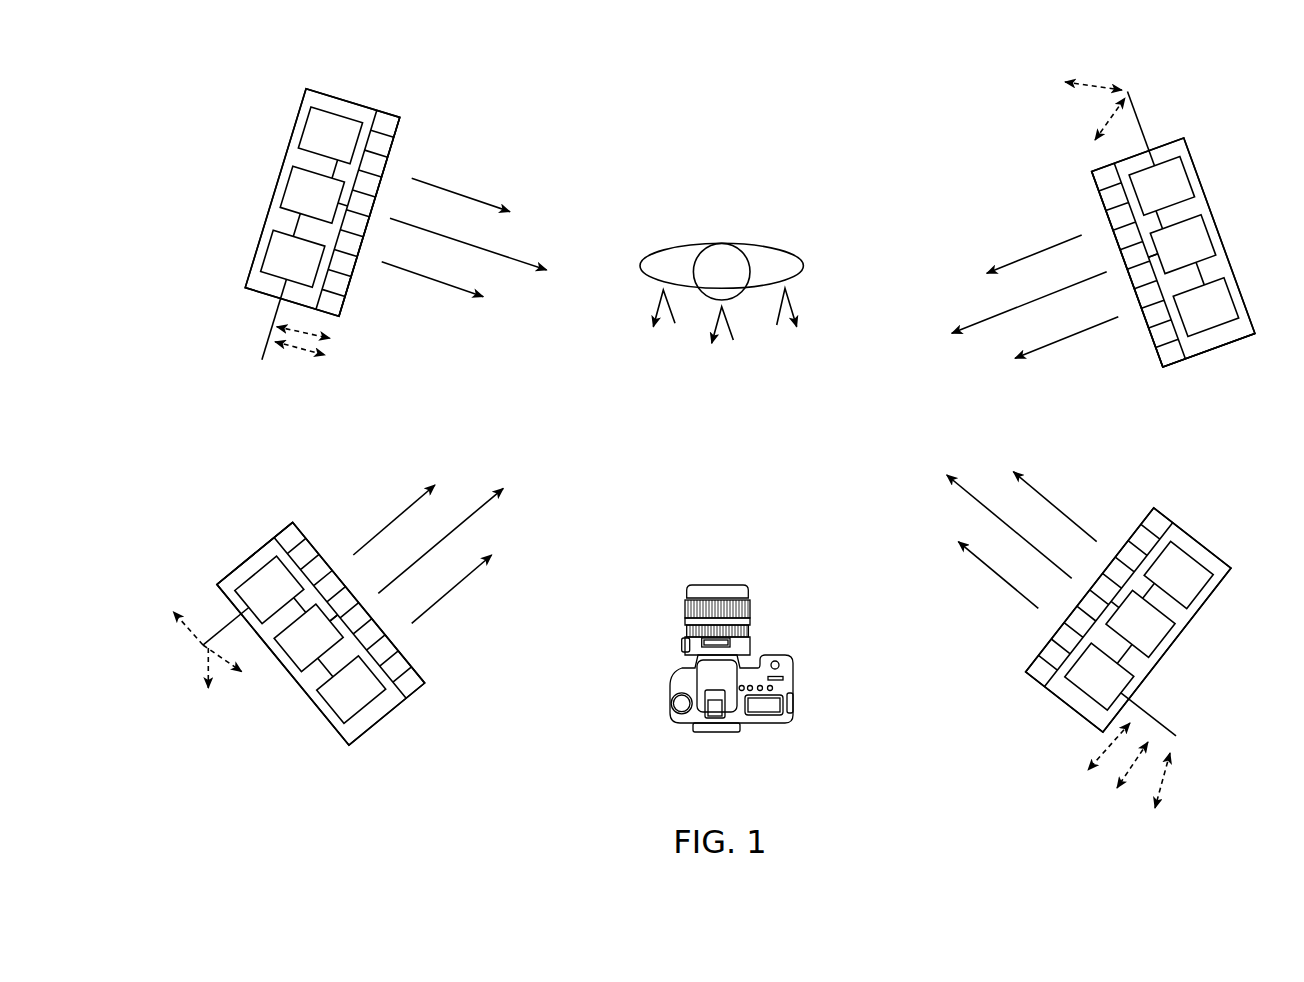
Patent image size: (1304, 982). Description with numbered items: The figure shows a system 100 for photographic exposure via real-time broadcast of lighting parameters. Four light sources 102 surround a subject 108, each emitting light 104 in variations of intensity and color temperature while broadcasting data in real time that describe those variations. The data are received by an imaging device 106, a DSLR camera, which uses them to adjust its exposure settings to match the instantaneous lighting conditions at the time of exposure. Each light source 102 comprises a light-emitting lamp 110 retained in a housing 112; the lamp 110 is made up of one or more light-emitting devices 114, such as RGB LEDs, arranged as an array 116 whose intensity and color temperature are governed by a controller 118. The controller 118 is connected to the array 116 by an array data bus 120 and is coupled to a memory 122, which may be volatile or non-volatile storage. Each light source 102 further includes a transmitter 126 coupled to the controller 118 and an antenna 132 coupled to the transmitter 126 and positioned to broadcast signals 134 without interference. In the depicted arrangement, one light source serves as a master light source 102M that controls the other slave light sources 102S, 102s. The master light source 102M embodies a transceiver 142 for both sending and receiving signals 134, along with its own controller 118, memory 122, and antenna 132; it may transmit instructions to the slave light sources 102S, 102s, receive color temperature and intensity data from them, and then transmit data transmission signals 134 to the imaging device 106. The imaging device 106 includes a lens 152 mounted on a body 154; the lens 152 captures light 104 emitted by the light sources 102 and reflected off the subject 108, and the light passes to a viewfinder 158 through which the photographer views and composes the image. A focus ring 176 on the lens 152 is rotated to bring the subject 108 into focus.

The system for photographic exposure via real-time broadcast of lighting parameters 100 is at (620, 733).
The light source 102 is at (315, 733).
The master light source 102M is at (283, 150).
The slave light source 102S is at (1190, 158).
The slave light source 102s is at (1220, 557).
The light 104 is at (483, 191).
The imaging device 106 is at (797, 642).
The subject 108 is at (763, 242).
The light-emitting lamp 110 is at (1160, 372).
The housing 112 is at (379, 110).
The light-emitting device 114 is at (388, 143).
The array 116 is at (361, 286).
The controller 118 is at (745, 418).
The array data bus 120 is at (333, 627).
The memory 122 is at (768, 415).
The transmitter 126 is at (1153, 263).
The antenna 132 is at (266, 350).
The signals 134 is at (294, 363).
The transceiver 142 is at (715, 433).
The lens 152 is at (687, 610).
The body 154 is at (793, 703).
The viewfinder 158 is at (720, 730).
The focus ring 176 is at (753, 607).